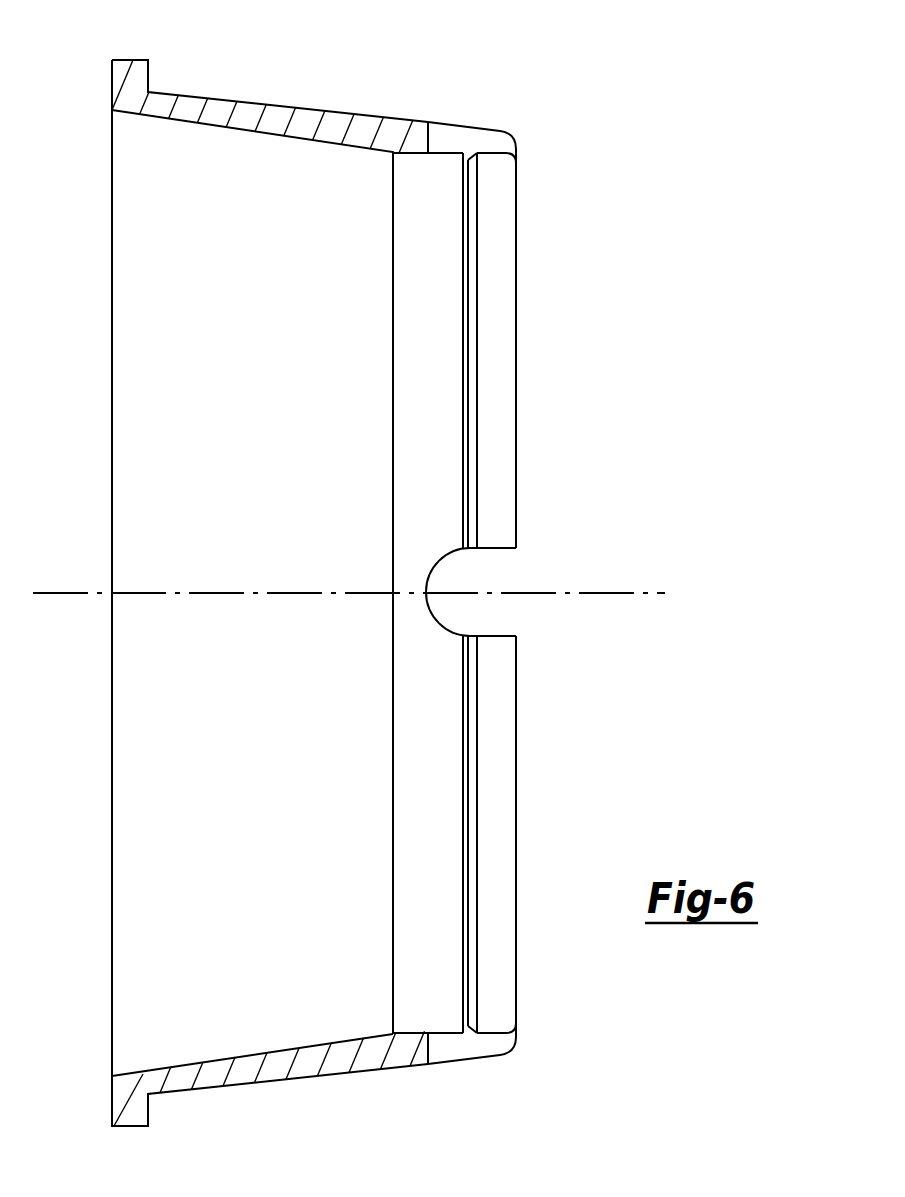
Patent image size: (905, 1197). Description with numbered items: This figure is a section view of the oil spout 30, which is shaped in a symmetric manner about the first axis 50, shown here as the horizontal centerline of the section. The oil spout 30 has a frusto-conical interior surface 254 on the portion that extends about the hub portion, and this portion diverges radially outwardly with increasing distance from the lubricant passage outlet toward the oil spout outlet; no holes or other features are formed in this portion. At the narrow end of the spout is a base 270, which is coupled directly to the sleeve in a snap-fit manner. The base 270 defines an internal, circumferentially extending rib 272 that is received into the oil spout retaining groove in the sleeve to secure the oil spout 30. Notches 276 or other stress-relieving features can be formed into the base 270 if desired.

The oil spout 30 is at (409, 87).
The first axis 50 is at (60, 593).
The frusto-conical interior surface 254 is at (256, 1053).
The base 270 is at (498, 992).
The internal circumferentially extending rib 272 is at (468, 265).
The notches 276 is at (488, 569).